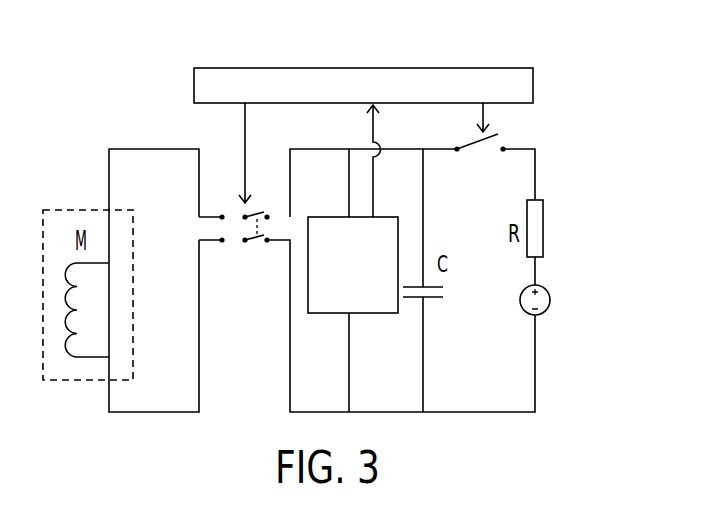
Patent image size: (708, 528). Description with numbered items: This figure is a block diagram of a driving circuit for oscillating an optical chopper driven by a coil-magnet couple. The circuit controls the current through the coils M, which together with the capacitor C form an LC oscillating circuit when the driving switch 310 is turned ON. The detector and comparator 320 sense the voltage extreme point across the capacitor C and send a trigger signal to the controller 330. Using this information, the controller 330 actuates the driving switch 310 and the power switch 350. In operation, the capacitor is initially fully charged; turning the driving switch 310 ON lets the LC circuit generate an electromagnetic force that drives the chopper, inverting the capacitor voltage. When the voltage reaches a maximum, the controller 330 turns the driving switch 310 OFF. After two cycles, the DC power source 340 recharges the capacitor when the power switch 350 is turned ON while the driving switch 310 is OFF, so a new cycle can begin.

The driving switch 310 is at (236, 257).
The detector and comparator 320 is at (370, 313).
The controller 330 is at (362, 68).
The DC power source 340 is at (550, 300).
The power switch 350 is at (480, 162).